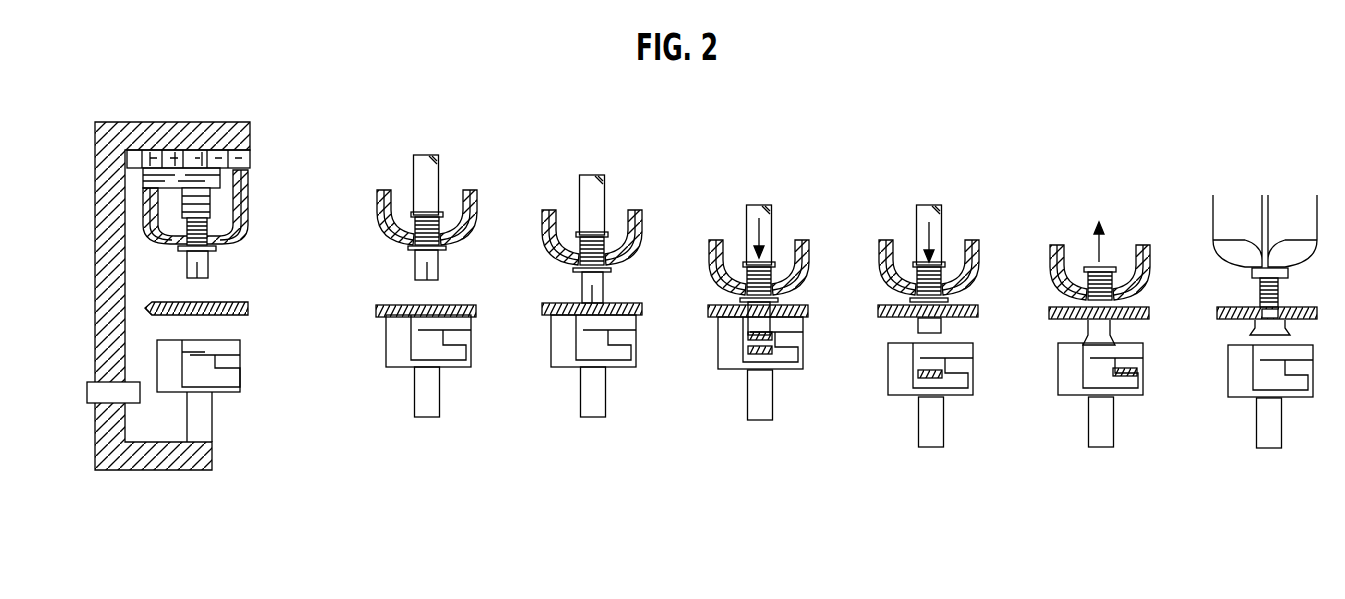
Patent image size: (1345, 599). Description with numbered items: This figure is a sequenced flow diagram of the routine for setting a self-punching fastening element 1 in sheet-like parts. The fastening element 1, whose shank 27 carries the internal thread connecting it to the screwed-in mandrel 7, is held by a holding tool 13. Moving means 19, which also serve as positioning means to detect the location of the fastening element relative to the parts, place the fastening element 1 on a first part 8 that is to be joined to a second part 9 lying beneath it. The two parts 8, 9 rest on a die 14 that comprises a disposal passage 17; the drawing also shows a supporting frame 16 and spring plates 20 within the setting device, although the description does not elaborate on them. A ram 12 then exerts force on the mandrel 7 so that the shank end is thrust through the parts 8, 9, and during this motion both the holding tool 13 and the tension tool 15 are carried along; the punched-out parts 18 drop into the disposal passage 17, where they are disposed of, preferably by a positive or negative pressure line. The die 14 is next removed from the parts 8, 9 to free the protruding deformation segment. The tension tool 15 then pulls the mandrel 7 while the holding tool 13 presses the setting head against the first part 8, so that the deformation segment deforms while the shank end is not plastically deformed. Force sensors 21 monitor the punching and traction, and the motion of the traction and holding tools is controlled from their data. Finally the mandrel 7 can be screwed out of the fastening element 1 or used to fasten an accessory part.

The fastening element 1 is at (197, 265).
The mandrel 7 is at (222, 240).
The first part 8 is at (152, 304).
The second part 9 is at (150, 315).
The ram 12 is at (200, 200).
The holding tool 13 is at (212, 247).
The die 14 is at (170, 383).
The tension tool 15 is at (150, 212).
The frame 16 is at (120, 460).
The disposal passage 17 is at (207, 368).
The punched-out parts 18 is at (748, 355).
The moving means 19 is at (202, 150).
The spring plates 20 is at (196, 180).
The force sensors 21 is at (245, 158).
The shank 27 is at (402, 252).